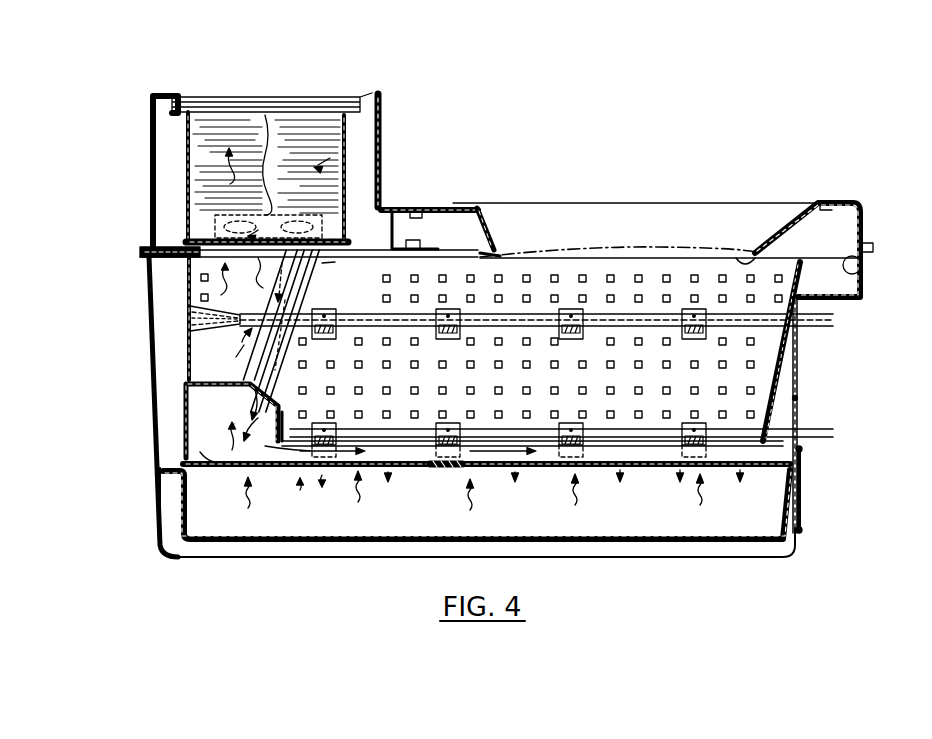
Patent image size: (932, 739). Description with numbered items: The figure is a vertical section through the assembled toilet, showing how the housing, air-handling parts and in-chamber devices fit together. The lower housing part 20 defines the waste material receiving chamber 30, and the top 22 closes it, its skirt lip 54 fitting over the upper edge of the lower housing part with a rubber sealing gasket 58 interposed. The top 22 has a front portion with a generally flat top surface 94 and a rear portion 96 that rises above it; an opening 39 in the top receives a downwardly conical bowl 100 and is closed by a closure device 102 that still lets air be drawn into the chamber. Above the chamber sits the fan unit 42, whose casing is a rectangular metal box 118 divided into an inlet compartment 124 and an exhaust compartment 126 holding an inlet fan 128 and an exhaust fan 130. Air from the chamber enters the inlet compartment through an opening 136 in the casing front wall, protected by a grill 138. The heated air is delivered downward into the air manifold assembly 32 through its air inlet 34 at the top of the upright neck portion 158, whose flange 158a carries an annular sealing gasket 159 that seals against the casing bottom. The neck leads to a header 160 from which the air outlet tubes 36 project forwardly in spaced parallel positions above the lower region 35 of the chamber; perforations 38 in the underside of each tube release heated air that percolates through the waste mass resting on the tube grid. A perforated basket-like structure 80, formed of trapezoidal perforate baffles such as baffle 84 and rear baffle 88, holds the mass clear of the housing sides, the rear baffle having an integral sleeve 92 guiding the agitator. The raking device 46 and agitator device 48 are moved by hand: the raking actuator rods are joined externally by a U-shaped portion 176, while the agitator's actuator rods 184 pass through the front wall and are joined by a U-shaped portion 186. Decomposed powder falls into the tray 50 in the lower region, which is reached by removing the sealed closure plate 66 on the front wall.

The lower housing part 20 is at (152, 396).
The top 22 is at (152, 134).
The waste material receiving chamber 30 is at (535, 276).
The air manifold assembly 32 is at (288, 414).
The air inlet 34 is at (336, 262).
The lower region 35 is at (494, 491).
The air outlet tubes 36 is at (641, 466).
The perforations 38 is at (574, 462).
The opening 39 is at (735, 254).
The fan unit 42 is at (358, 140).
The raking device 46 is at (620, 418).
The agitator device 48 is at (569, 347).
The tray 50 is at (183, 497).
The lip 54 is at (872, 243).
The sealing gasket 58 is at (862, 268).
The closure plate 66 is at (800, 490).
The perforated basket-like structure 80 is at (795, 398).
The perforate baffle 84 is at (762, 351).
The rear baffle 88 is at (189, 300).
The sleeve 92 is at (190, 324).
The flat top surface 94 is at (437, 207).
The rear portion 96 is at (382, 140).
The conical bowl 100 is at (490, 225).
The closure device 102 is at (628, 243).
The metal box 118 is at (186, 173).
The inlet compartment 124 is at (308, 125).
The exhaust compartment 126 is at (208, 140).
The inlet fan 128 is at (287, 270).
The exhaust fan 130 is at (214, 225).
The opening 136 is at (340, 230).
The grill 138 is at (343, 188).
The neck portion 158 is at (189, 338).
The flange 158a is at (189, 262).
The annular sealing gasket 159 is at (220, 243).
The header 160 is at (188, 400).
The U-shaped portion 176 is at (822, 440).
The actuator rods 184 is at (247, 325).
The U-shaped portion 186 is at (835, 321).